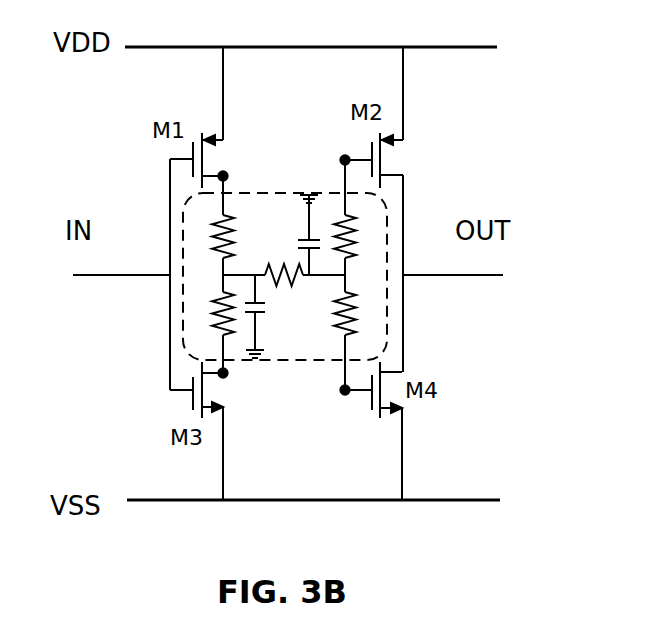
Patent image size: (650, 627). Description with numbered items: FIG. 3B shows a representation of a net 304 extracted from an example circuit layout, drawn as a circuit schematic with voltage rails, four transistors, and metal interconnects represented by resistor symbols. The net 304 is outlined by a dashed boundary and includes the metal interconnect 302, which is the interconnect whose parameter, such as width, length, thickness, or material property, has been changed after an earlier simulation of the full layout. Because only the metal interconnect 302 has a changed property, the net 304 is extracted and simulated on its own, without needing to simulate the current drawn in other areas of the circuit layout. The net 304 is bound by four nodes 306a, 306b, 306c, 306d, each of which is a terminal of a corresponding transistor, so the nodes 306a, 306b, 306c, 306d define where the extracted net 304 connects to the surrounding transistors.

The metal interconnect 302 is at (282, 280).
The net 304 is at (381, 200).
The node 306a is at (227, 171).
The node 306b is at (225, 377).
The node 306c is at (343, 155).
The node 306d is at (347, 394).